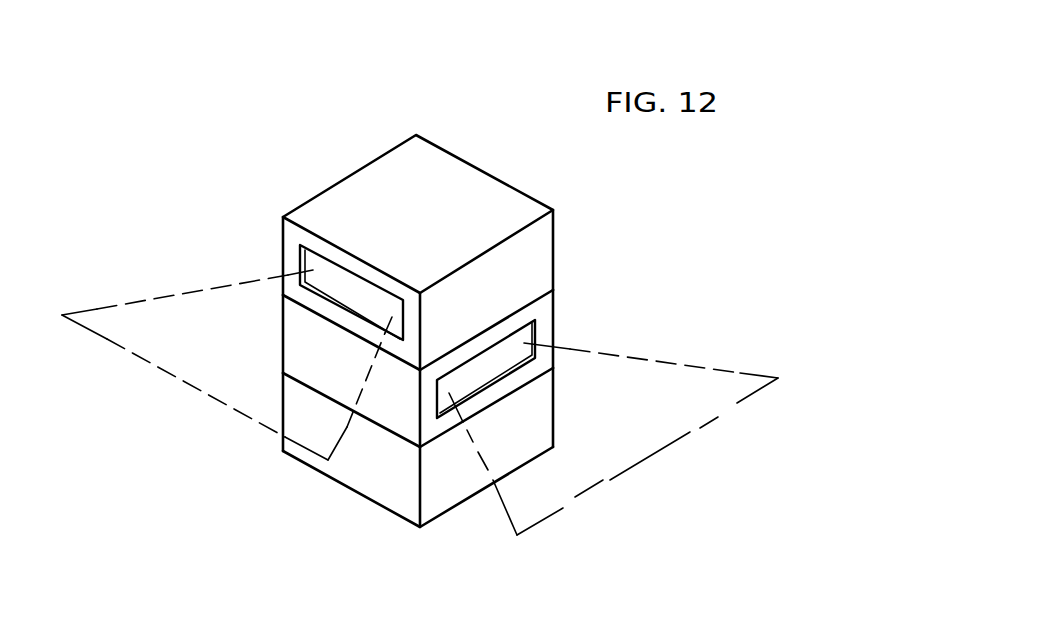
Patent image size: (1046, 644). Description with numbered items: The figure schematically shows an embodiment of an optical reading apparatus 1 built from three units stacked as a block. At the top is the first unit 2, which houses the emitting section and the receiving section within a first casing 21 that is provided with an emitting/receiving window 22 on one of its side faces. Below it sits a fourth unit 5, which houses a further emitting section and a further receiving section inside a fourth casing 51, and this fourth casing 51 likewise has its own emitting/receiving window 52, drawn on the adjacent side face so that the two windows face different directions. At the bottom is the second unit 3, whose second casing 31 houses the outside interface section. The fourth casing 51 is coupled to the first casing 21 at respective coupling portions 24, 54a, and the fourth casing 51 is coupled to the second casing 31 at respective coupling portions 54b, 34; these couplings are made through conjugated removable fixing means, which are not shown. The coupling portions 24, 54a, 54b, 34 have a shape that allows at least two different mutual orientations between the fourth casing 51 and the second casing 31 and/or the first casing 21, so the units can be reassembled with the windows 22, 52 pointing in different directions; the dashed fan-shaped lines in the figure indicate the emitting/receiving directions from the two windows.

The optical reading apparatus 1 is at (181, 128).
The first unit 2 is at (477, 252).
The first casing 21 is at (530, 245).
The emitting/receiving window 22 is at (317, 263).
The coupling portion 24 is at (500, 313).
The coupling portion 54a is at (553, 288).
The fourth unit 5 is at (346, 368).
The fourth casing 51 is at (323, 342).
The emitting/receiving window 52 is at (522, 335).
The coupling portion 54b is at (539, 388).
The coupling portion 34 is at (553, 368).
The second unit 3 is at (407, 459).
The second casing 31 is at (362, 458).